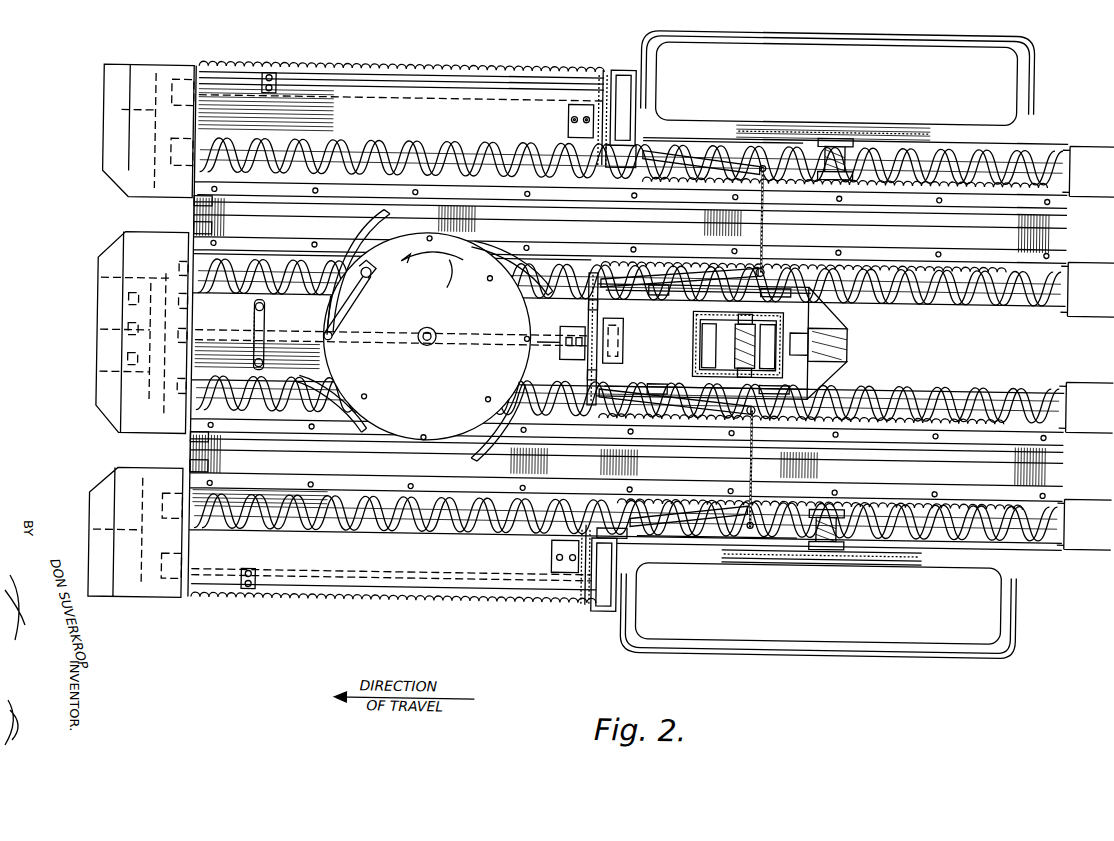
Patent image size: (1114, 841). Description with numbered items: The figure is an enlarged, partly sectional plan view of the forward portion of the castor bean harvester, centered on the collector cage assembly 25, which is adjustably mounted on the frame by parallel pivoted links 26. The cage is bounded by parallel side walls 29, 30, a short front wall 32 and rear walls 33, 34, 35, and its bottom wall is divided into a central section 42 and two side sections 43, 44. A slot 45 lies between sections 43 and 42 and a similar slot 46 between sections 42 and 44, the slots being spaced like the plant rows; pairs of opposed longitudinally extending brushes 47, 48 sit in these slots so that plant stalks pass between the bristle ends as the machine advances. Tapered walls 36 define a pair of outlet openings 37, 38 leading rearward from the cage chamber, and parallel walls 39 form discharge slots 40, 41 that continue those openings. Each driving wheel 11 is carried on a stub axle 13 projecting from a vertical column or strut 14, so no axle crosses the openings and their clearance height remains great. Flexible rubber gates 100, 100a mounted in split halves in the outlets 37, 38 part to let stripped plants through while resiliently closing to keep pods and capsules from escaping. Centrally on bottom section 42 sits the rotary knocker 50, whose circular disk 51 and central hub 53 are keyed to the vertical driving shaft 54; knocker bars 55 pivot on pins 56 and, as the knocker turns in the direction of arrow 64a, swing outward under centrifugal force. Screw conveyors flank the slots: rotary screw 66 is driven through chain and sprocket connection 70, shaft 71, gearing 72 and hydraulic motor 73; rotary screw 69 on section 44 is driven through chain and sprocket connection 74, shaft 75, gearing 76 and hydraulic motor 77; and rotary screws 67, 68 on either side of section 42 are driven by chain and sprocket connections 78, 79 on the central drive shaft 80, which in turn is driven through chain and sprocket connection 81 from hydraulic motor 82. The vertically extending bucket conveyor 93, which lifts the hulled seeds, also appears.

The driving wheel 11 is at (1005, 52).
The stub axle 13 is at (835, 124).
The vertical column or strut 14 is at (812, 140).
The collector cage assembly 25 is at (493, 69).
The parallel pivoted link 26 is at (712, 163).
The side wall 29 is at (410, 72).
The side wall 30 is at (356, 604).
The front wall 32 is at (250, 317).
The rear wall 33 is at (598, 88).
The rear wall 34 is at (585, 320).
The rear wall 35 is at (565, 586).
The tapered wall 36 is at (705, 156).
The outlet opening 37 is at (590, 218).
The outlet opening 38 is at (664, 456).
The parallel wall 39 is at (880, 262).
The discharge slot 40 is at (1032, 200).
The discharge slot 41 is at (1025, 494).
The central bottom section 42 is at (97, 360).
The side bottom section 43 is at (99, 136).
The side bottom section 44 is at (102, 515).
The slot 45 is at (122, 226).
The slot 46 is at (135, 460).
The brush 47 is at (190, 212).
The brush 48 is at (190, 229).
The rotary knocker 50 is at (460, 248).
The circular disk 51 is at (392, 335).
The central hub 53 is at (420, 334).
The vertical driving shaft 54 is at (436, 335).
The knocker bar 55 is at (372, 219).
The pin 56 is at (330, 345).
The arrow 64a is at (434, 278).
The rotary screw 66 is at (292, 160).
The rotary screw 67 is at (256, 276).
The rotary screw 68 is at (276, 400).
The rotary screw 69 is at (238, 505).
The chain and sprocket connection 70 is at (118, 117).
The shaft 71 is at (340, 97).
The gearing 72 is at (635, 107).
The hydraulic motor 73 is at (565, 117).
The chain and sprocket connection 74 is at (102, 530).
The shaft 75 is at (418, 587).
The gearing 76 is at (625, 582).
The hydraulic motor 77 is at (555, 548).
The chain and sprocket connection 78 is at (119, 277).
The chain and sprocket connection 79 is at (104, 370).
The central drive shaft 80 is at (105, 327).
The chain and sprocket connection 81 is at (623, 340).
The hydraulic motor 82 is at (575, 361).
The bucket conveyor 93 is at (705, 338).
The flexible rubber gate 100 is at (765, 217).
The flexible rubber gate 100a is at (763, 438).